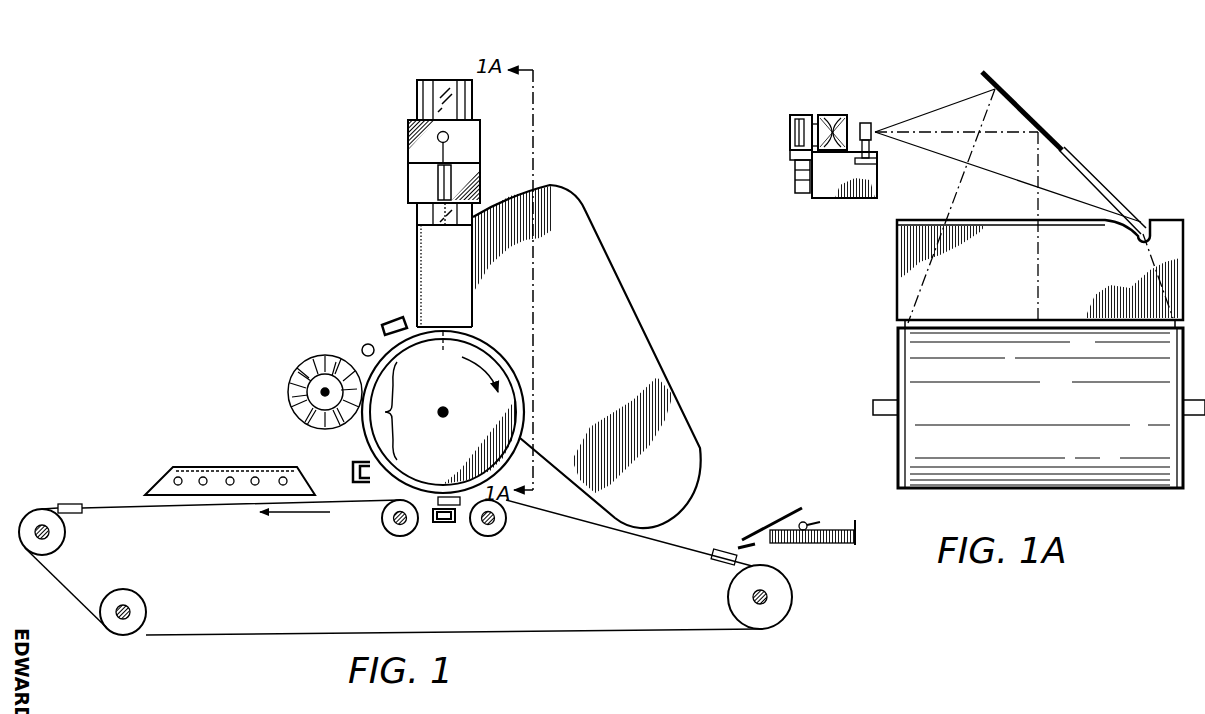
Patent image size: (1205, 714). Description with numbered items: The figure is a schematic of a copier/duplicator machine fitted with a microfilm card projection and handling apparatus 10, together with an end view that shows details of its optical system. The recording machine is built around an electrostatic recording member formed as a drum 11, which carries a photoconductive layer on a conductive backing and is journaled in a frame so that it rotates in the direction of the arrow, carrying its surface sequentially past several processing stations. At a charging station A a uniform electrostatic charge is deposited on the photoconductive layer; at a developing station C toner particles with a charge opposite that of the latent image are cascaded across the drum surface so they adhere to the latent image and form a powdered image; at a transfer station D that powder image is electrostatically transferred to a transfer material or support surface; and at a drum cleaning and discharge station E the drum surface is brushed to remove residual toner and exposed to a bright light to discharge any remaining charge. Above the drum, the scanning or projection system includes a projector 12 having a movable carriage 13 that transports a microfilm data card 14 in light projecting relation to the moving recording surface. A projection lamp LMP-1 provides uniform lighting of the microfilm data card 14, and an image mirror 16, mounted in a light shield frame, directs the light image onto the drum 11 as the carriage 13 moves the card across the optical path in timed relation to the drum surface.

In FIG. 1, the microfilm card projection and handling apparatus 10 is at (396, 152).
In FIG. 1A, the microfilm card projection and handling apparatus 10 is at (808, 94).
In FIG. 1, the image mirror 16 is at (455, 80).
In FIG. 1A, the image mirror 16 is at (1064, 138).
In FIG. 1, the drum 11 is at (362, 428).
In FIG. 1A, the drum 11 is at (933, 488).
In FIG. 1A, the projector 12 is at (790, 117).
In FIG. 1A, the microfilm data card 14 is at (846, 118).
In FIG. 1A, the movable carriage 13 is at (894, 107).
In FIG. 1A, the projection lamp LMP-1 is at (790, 133).
In FIG. 1, the charging station A is at (374, 334).
In FIG. 1, the developing station C is at (490, 340).
In FIG. 1, the transfer station D is at (441, 527).
In FIG. 1, the drum cleaning and discharge station E is at (395, 411).